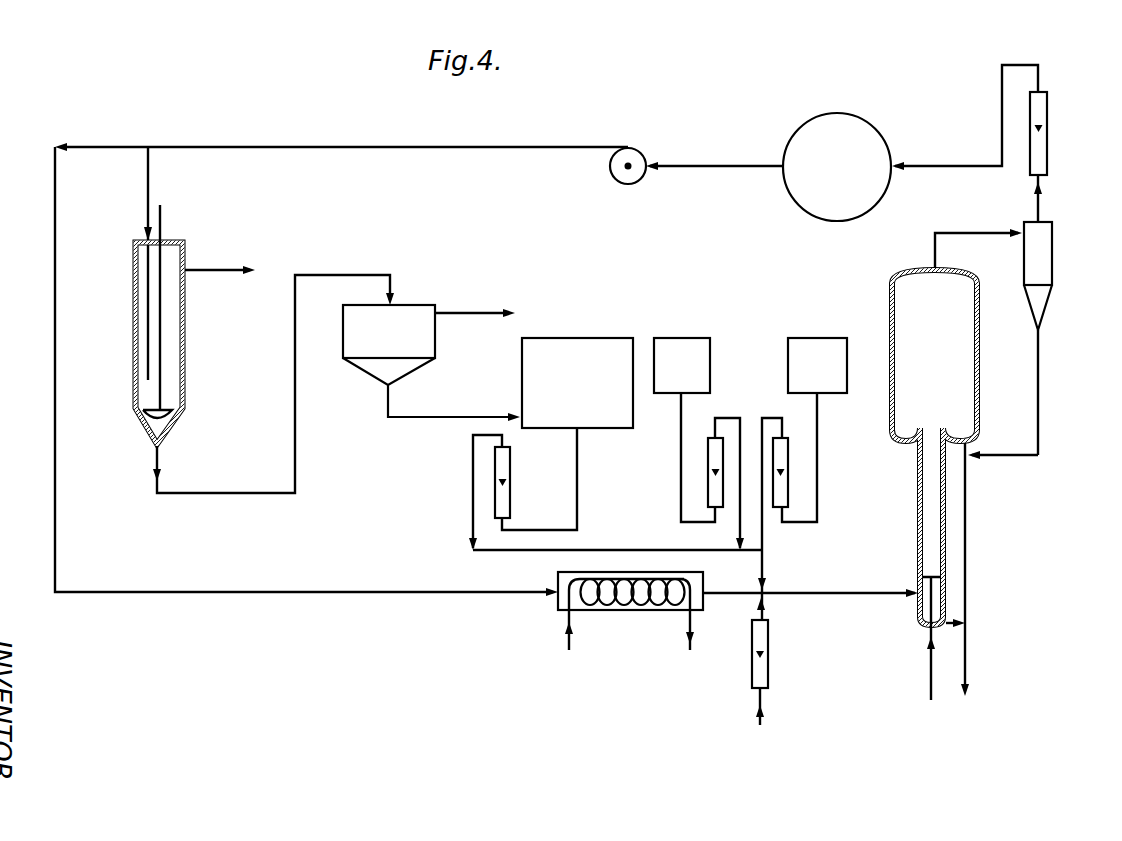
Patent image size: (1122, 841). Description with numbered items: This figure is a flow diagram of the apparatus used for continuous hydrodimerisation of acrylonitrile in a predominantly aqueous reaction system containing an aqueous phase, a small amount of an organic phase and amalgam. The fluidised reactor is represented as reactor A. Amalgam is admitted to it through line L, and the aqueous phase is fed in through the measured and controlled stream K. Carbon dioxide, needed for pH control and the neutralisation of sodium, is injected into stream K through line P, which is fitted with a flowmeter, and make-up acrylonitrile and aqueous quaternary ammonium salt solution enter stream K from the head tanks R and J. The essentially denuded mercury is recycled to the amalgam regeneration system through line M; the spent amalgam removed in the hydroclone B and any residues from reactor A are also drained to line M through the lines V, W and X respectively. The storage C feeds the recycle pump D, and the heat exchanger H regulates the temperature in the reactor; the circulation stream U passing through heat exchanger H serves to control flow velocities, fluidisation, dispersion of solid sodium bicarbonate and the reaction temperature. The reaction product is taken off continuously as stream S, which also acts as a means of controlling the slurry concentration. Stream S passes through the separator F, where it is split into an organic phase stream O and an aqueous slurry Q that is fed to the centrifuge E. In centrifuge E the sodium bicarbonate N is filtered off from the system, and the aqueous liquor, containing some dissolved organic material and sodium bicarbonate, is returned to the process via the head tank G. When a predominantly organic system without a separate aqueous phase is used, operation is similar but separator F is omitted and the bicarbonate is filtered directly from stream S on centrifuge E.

The fluidised reactor A is at (946, 551).
The hydroclone B is at (1055, 266).
The storage C is at (808, 122).
The recycle pump D is at (635, 148).
The centrifuge E is at (420, 300).
The separator F is at (133, 266).
The head tank G is at (601, 336).
The heat exchanger H is at (593, 611).
The head tank J is at (815, 337).
The aqueous phase feed stream K is at (868, 590).
The amalgam line L is at (928, 675).
The mercury recycle line M is at (968, 676).
The sodium bicarbonate N is at (517, 311).
The organic phase stream O is at (245, 268).
The carbon dioxide line P is at (762, 698).
The aqueous slurry Q is at (267, 493).
The head tank R is at (688, 336).
The reaction product stream S is at (150, 192).
The circulation stream U is at (203, 590).
The drain line V is at (1040, 375).
The drain line W is at (968, 447).
The drain line X is at (950, 628).